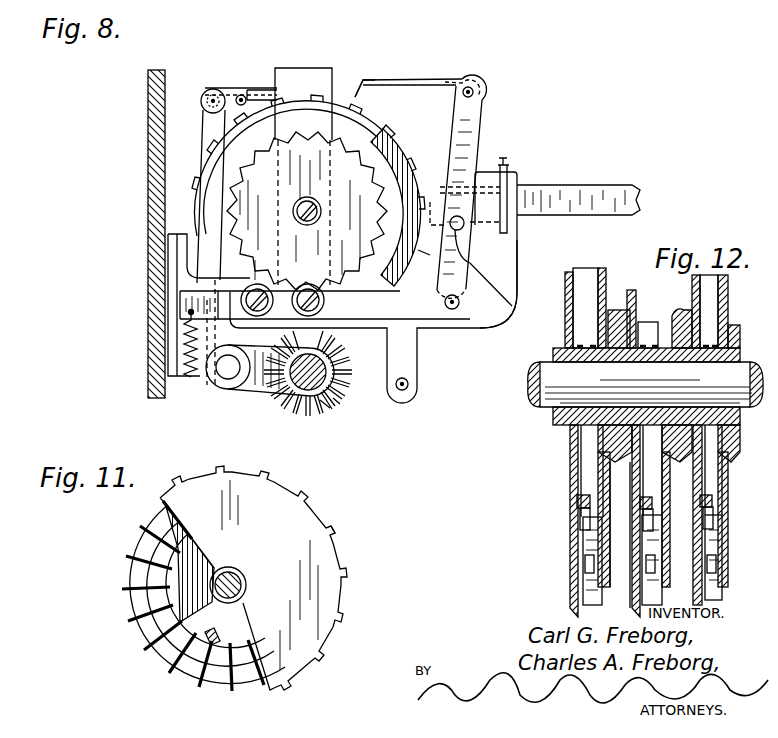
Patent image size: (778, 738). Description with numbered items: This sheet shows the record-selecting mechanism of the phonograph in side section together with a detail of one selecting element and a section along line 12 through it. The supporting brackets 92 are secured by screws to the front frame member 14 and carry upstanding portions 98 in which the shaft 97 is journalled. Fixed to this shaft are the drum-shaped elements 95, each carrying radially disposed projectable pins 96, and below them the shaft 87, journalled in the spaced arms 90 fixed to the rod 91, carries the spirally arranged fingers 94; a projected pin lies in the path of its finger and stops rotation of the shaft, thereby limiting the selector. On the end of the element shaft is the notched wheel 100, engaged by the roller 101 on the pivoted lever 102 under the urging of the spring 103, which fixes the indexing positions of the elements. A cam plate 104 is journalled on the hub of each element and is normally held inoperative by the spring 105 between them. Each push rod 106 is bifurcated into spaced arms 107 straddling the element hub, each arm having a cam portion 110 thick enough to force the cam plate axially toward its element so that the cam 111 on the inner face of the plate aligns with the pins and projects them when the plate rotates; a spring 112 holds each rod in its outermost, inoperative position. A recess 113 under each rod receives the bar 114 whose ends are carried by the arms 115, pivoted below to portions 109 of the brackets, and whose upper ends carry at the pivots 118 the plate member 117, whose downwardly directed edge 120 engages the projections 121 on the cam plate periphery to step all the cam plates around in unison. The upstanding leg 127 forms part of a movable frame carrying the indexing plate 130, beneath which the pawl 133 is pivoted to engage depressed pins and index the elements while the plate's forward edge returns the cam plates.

In FIG. 11, the section line 12— 12 is at (238, 568).
In FIG. 8, the front frame member 14 is at (147, 162).
In FIG. 8, the shaft 87 is at (307, 383).
In FIG. 8, the spaced arms 90 is at (258, 381).
In FIG. 8, the rod 91 is at (218, 390).
In FIG. 8, the supporting brackets 92 is at (182, 266).
In FIG. 8, the fingers 94 is at (338, 404).
In FIG. 8, the elements 95 is at (385, 158).
In FIG. 11, the elements 95 is at (133, 577).
In FIG. 12, the elements 95 is at (592, 345).
In FIG. 8, the projectable pins 96 is at (366, 120).
In FIG. 11, the projectable pins 96 is at (142, 618).
In FIG. 12, the projectable pins 96 is at (590, 591).
In FIG. 8, the shaft 97 is at (322, 207).
In FIG. 11, the shaft 97 is at (246, 583).
In FIG. 12, the shaft 97 is at (528, 394).
In FIG. 8, the upstanding portions 98 is at (294, 74).
In FIG. 8, the notched wheel 100 is at (390, 285).
In FIG. 8, the roller 101 is at (325, 302).
In FIG. 8, the pivoted lever 102 is at (300, 292).
In FIG. 8, the spring 103 is at (184, 336).
In FIG. 8, the cam plates 104 is at (382, 163).
In FIG. 11, the cam plates 104 is at (316, 603).
In FIG. 12, the cam plates 104 is at (640, 479).
In FIG. 11, the spring 105 is at (212, 598).
In FIG. 12, the spring 105 is at (590, 353).
In FIG. 8, the push rods 106 is at (585, 200).
In FIG. 12, the spaced arms 107 is at (679, 312).
In FIG. 8, the portions 109 is at (503, 266).
In FIG. 12, the cam portion 110 is at (612, 312).
In FIG. 11, the cam 111 is at (215, 633).
In FIG. 12, the cam 111 is at (578, 500).
In FIG. 8, the spring 112 is at (508, 181).
In FIG. 8, the recess 113 is at (512, 242).
In FIG. 8, the bar 114 is at (418, 250).
In FIG. 8, the arms 115 is at (470, 115).
In FIG. 8, the plate member 117 is at (393, 79).
In FIG. 8, the pivot 118 is at (468, 86).
In FIG. 8, the downwardly directed edge 120 is at (358, 92).
In FIG. 8, the projections 121 is at (480, 297).
In FIG. 11, the projections 121 is at (333, 525).
In FIG. 8, the upstanding leg 127 is at (207, 130).
In FIG. 8, the indexing plate 130 is at (252, 87).
In FIG. 8, the pawl 133 is at (263, 92).